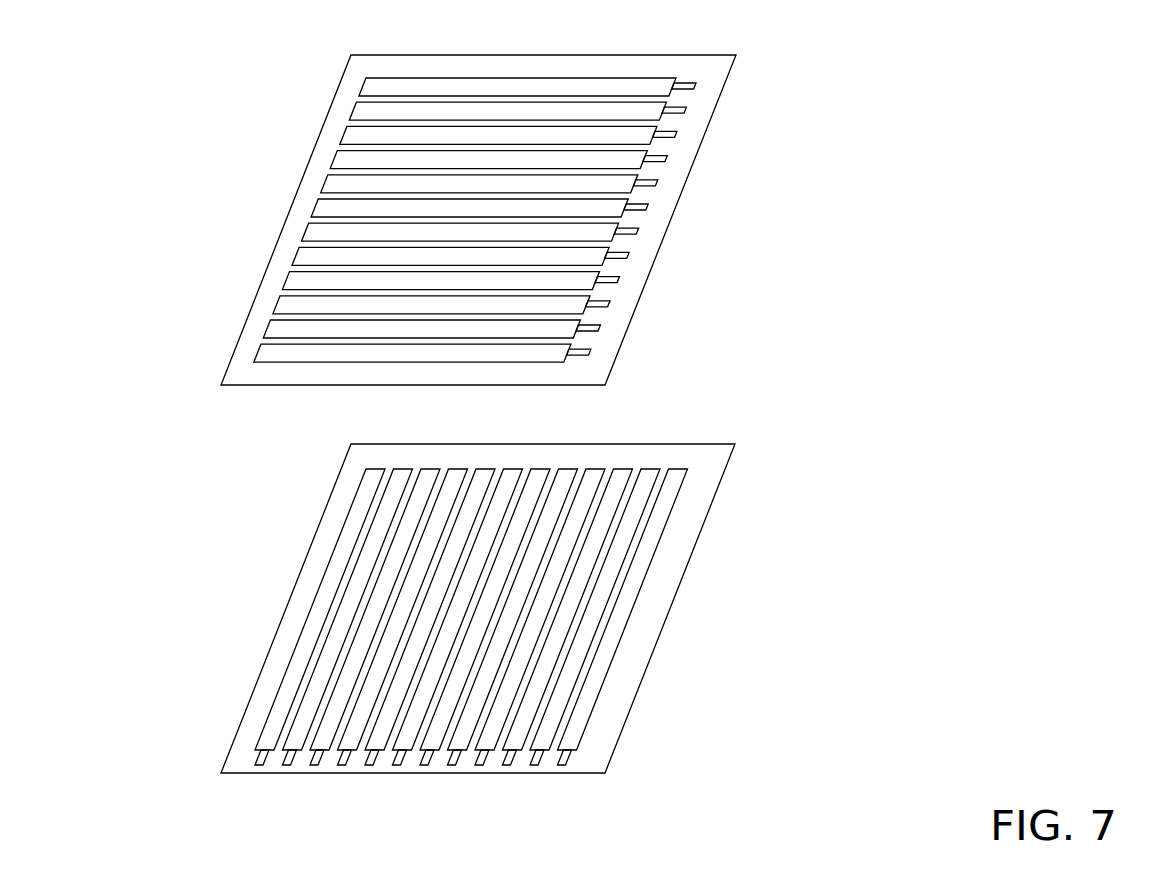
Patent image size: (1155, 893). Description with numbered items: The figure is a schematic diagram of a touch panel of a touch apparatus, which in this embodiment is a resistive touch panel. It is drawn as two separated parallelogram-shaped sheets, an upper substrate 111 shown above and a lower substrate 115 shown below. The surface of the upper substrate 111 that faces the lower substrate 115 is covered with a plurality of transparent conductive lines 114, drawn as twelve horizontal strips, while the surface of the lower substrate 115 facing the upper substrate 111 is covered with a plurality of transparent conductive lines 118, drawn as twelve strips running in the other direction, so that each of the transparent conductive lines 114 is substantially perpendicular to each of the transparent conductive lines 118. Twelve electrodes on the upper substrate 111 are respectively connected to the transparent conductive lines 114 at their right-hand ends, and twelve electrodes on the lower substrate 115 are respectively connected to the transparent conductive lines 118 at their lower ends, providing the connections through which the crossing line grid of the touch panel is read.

The upper substrate 111 is at (635, 68).
The transparent conductive lines 114 is at (437, 88).
The lower substrate 115 is at (581, 458).
The transparent conductive lines 118 is at (512, 487).